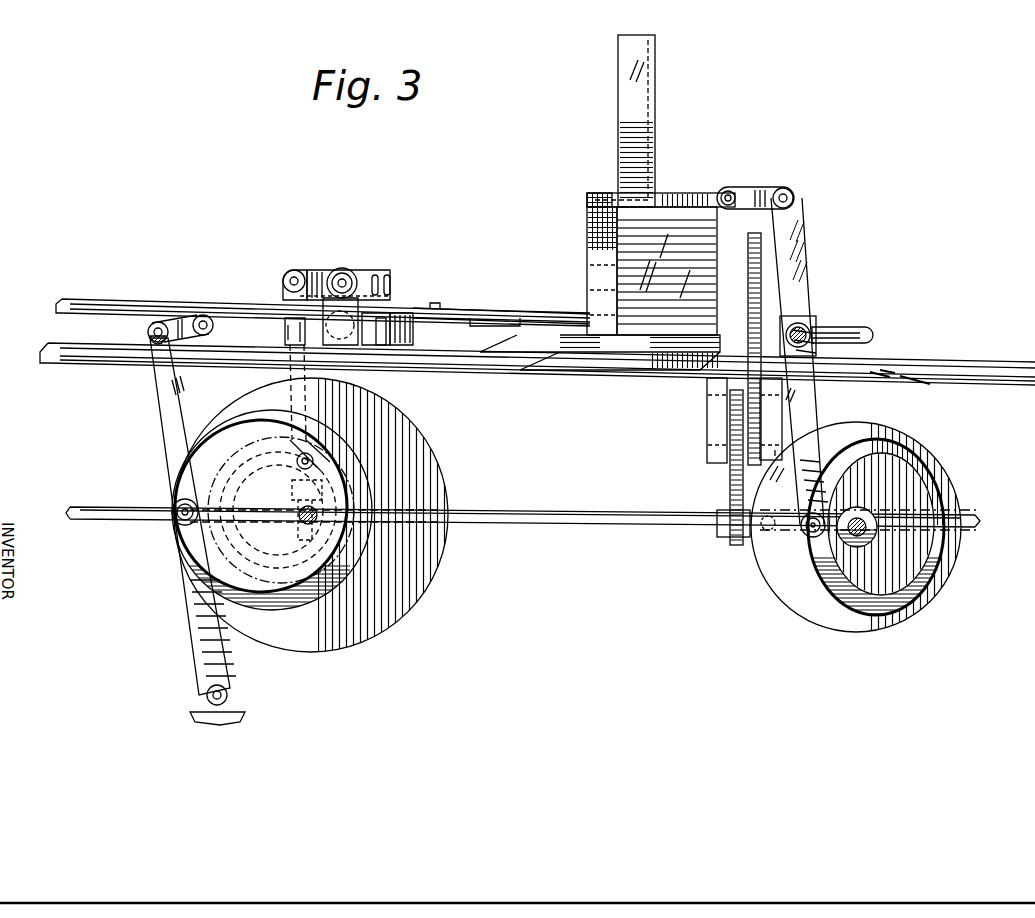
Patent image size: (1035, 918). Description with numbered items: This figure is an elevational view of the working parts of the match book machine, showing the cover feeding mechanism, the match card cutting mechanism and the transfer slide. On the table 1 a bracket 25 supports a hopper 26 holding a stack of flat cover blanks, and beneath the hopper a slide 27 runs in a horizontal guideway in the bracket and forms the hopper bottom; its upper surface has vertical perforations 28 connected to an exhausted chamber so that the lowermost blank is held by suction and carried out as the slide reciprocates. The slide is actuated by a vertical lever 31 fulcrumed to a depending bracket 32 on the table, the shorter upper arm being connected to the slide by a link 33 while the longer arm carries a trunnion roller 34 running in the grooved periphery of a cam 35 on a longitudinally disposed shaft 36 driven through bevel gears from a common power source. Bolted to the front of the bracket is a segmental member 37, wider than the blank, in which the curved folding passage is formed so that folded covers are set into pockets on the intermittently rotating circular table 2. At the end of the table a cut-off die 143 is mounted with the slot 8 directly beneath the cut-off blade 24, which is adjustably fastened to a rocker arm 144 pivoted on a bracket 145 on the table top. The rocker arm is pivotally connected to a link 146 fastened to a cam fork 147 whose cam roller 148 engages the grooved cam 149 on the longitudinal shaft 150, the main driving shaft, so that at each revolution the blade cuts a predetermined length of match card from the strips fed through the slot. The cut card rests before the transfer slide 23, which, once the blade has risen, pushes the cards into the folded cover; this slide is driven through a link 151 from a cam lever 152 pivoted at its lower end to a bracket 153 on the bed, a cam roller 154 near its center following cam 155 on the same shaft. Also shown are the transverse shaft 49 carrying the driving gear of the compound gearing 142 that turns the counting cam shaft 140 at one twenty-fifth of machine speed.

The table 1 is at (556, 372).
The circular table 2 is at (595, 320).
The slot 8 is at (405, 306).
The transfer slide 23 is at (203, 314).
The cut-off blade 24 is at (385, 305).
The bracket 25 is at (710, 237).
The hopper 26 is at (648, 112).
The slide 27 is at (664, 192).
The vertical perforations 28 is at (586, 194).
The vertical lever 31 is at (798, 242).
The depending bracket 32 is at (808, 330).
The link 33 is at (745, 192).
The trunnion roller 34 is at (800, 540).
The cam 35 is at (934, 474).
The longitudinally disposed shaft 36 is at (852, 538).
The segmental member 37 is at (592, 240).
The transverse shaft 49 is at (690, 528).
The shaft 140 is at (852, 326).
The compound gearing 142 is at (762, 290).
The cut-off die 143 is at (382, 345).
The rocker arm 144 is at (374, 272).
The bracket 145 is at (342, 270).
The link 146 is at (283, 293).
The cam fork 147 is at (296, 455).
The cam roller 148 is at (300, 462).
The cam 149 is at (355, 500).
The longitudinal shaft 150 is at (300, 522).
The link 151 is at (176, 318).
The cam lever 152 is at (160, 408).
The bracket 153 is at (230, 708).
The cam roller 154 is at (176, 525).
The cam 155 is at (312, 600).